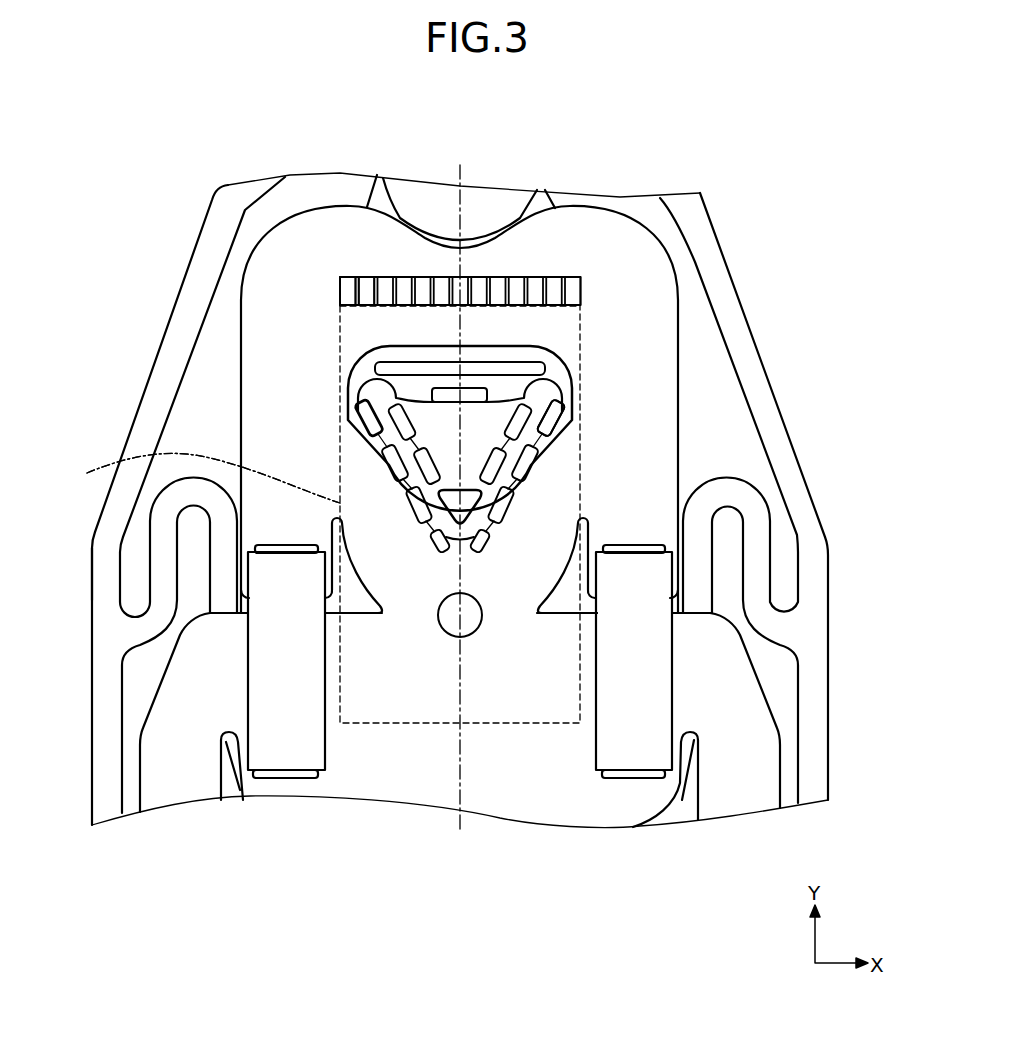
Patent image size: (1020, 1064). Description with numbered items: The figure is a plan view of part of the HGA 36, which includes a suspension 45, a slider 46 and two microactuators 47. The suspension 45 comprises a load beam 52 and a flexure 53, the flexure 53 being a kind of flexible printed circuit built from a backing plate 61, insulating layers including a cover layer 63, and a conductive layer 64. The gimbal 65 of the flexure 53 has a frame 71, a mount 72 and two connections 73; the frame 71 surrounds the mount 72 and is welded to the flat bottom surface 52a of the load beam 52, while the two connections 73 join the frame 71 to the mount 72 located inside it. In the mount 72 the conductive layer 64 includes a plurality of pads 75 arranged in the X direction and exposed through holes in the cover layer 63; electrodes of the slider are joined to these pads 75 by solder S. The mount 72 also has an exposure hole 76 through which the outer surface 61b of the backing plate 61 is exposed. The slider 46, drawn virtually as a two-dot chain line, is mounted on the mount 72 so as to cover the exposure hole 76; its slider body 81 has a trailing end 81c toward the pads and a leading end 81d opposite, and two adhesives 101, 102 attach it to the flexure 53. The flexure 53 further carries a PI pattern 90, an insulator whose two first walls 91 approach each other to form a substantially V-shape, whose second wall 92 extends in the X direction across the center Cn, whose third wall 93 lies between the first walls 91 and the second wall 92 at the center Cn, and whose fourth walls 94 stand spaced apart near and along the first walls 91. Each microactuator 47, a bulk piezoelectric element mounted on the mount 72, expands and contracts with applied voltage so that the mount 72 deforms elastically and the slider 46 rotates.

The HGA 36 is at (140, 190).
The suspension 45 is at (722, 222).
The flexure 53 is at (523, 193).
The gimbal 65 is at (470, 508).
The conductive layer 64 is at (366, 277).
The pad 75 is at (572, 282).
The solder S is at (482, 199).
The load beam 52 is at (540, 200).
The bottom surface 52a is at (481, 169).
The trailing end 81c is at (403, 276).
The leading end 81d is at (390, 727).
The slider body 81 is at (198, 478).
The slider 46 is at (120, 473).
The third wall 93 is at (447, 388).
The second wall 92 is at (508, 362).
The adhesive 101 is at (545, 400).
The cover layer 63 is at (262, 273).
The mount 72 is at (405, 409).
The frame 71 is at (745, 350).
The first wall 91 is at (357, 417).
The exposure hole 76 is at (357, 433).
The PI pattern 90 is at (575, 436).
The backing plate 61 is at (507, 538).
The surface 61b is at (685, 507).
The fourth wall 94 is at (445, 522).
The connection 73 is at (160, 542).
The microactuator 47 is at (290, 752).
The adhesive 102 is at (470, 622).
The center Cn is at (460, 822).